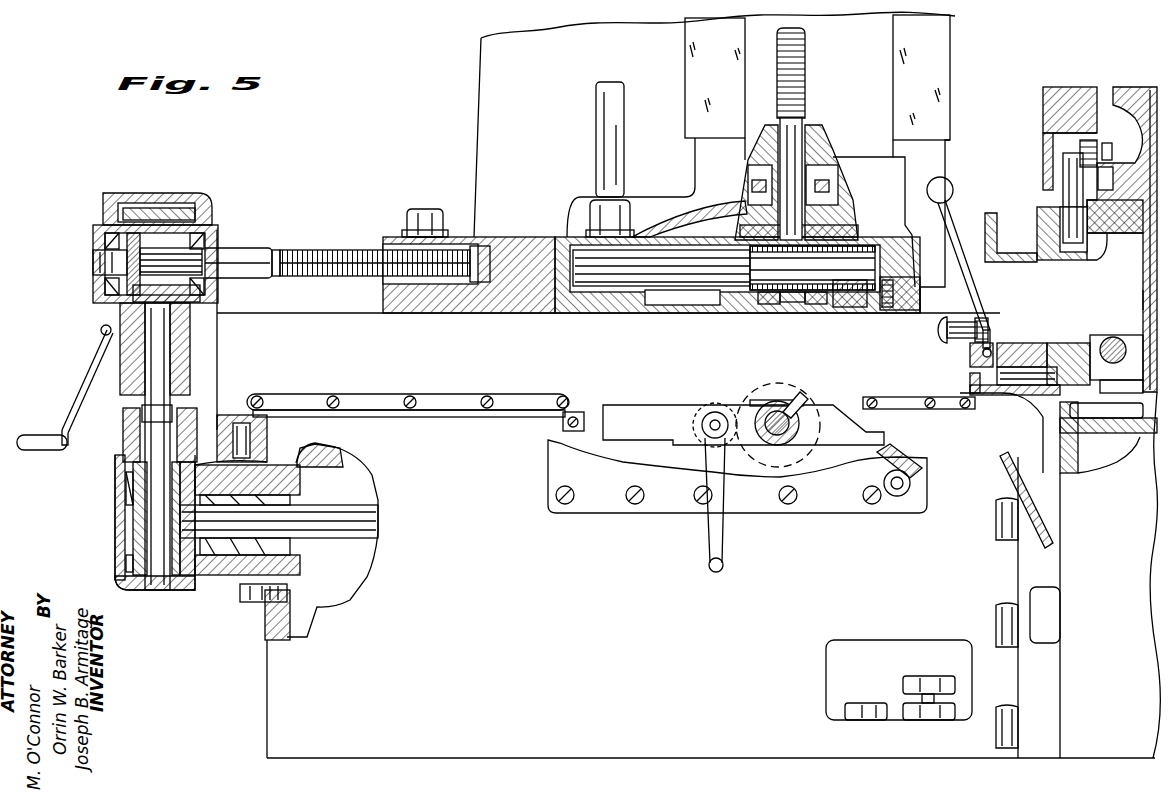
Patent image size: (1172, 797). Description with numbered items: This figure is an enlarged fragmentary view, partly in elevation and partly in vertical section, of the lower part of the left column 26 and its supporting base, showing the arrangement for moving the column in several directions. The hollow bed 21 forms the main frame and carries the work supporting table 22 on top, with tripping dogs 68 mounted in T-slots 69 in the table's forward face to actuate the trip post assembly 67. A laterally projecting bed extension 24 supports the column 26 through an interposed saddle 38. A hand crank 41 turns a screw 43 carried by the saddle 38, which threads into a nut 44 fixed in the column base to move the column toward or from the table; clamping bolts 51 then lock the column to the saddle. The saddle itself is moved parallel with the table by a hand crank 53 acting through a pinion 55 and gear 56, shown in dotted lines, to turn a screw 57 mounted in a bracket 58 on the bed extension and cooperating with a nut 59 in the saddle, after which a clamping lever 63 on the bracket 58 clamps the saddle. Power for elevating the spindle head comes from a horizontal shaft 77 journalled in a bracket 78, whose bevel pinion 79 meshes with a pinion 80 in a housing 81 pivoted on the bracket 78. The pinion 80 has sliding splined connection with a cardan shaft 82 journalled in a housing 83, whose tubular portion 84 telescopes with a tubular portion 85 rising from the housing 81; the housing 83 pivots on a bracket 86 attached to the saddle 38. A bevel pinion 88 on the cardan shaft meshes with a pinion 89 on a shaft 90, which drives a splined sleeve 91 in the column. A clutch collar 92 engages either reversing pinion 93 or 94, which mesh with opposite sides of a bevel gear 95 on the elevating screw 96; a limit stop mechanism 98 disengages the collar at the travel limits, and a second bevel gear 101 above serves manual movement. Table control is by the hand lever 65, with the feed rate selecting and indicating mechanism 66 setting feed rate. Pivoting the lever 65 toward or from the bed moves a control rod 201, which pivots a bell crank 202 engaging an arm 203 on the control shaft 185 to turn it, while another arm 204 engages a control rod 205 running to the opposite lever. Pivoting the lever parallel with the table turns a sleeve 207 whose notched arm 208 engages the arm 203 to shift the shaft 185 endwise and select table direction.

The bed 21 is at (1120, 742).
The work supporting table 22 is at (1083, 87).
The bed extension 24 is at (283, 706).
The supporting column 26 is at (495, 71).
The saddle 38 is at (308, 330).
The hand crank 41 is at (88, 378).
The screw 43 is at (345, 248).
The nut 44 is at (385, 288).
The clamping bolt 51 is at (425, 207).
The hand crank 53 is at (708, 570).
The pinion 55 is at (716, 403).
The gear 56 is at (753, 400).
The screw 57 is at (803, 412).
The bracket 58 is at (598, 506).
The nut 59 is at (794, 394).
The clamping lever 63 is at (898, 455).
The hand lever 65 is at (953, 185).
The feed rate selecting and indicating mechanism 66 is at (937, 337).
The trip post assembly 67 is at (1063, 165).
The tripping dog 68 is at (1081, 150).
The T-slot 69 is at (1141, 92).
The horizontal shaft 77 is at (345, 528).
The bracket 78 is at (240, 600).
The bevel pinion 79 is at (215, 576).
The bevel pinion 80 is at (125, 492).
The housing 81 is at (115, 515).
The cardan shaft 82 is at (150, 397).
The housing 83 is at (190, 343).
The tubular portion 84 is at (186, 368).
The tubular portion 85 is at (125, 418).
The bracket 86 is at (219, 311).
The bevel pinion 88 is at (125, 293).
The bevel pinion 89 is at (93, 258).
The shaft 90 is at (246, 250).
The sleeve 91 is at (690, 288).
The clutch collar 92 is at (797, 305).
The reversing pinion 93 is at (765, 313).
The reversing pinion 94 is at (838, 312).
The bevel gear 95 is at (733, 225).
The elevating screw 96 is at (808, 72).
The limit stop mechanism 98 is at (607, 115).
The bevel gear 101 is at (842, 212).
The control shaft 185 is at (1145, 305).
The control rod 201 is at (1015, 395).
The bell crank 202 is at (1067, 400).
The arm 203 is at (1113, 337).
The arm 204 is at (1123, 440).
The control rod 205 is at (1142, 437).
The sleeve 207 is at (1030, 412).
The arm 208 is at (1122, 386).